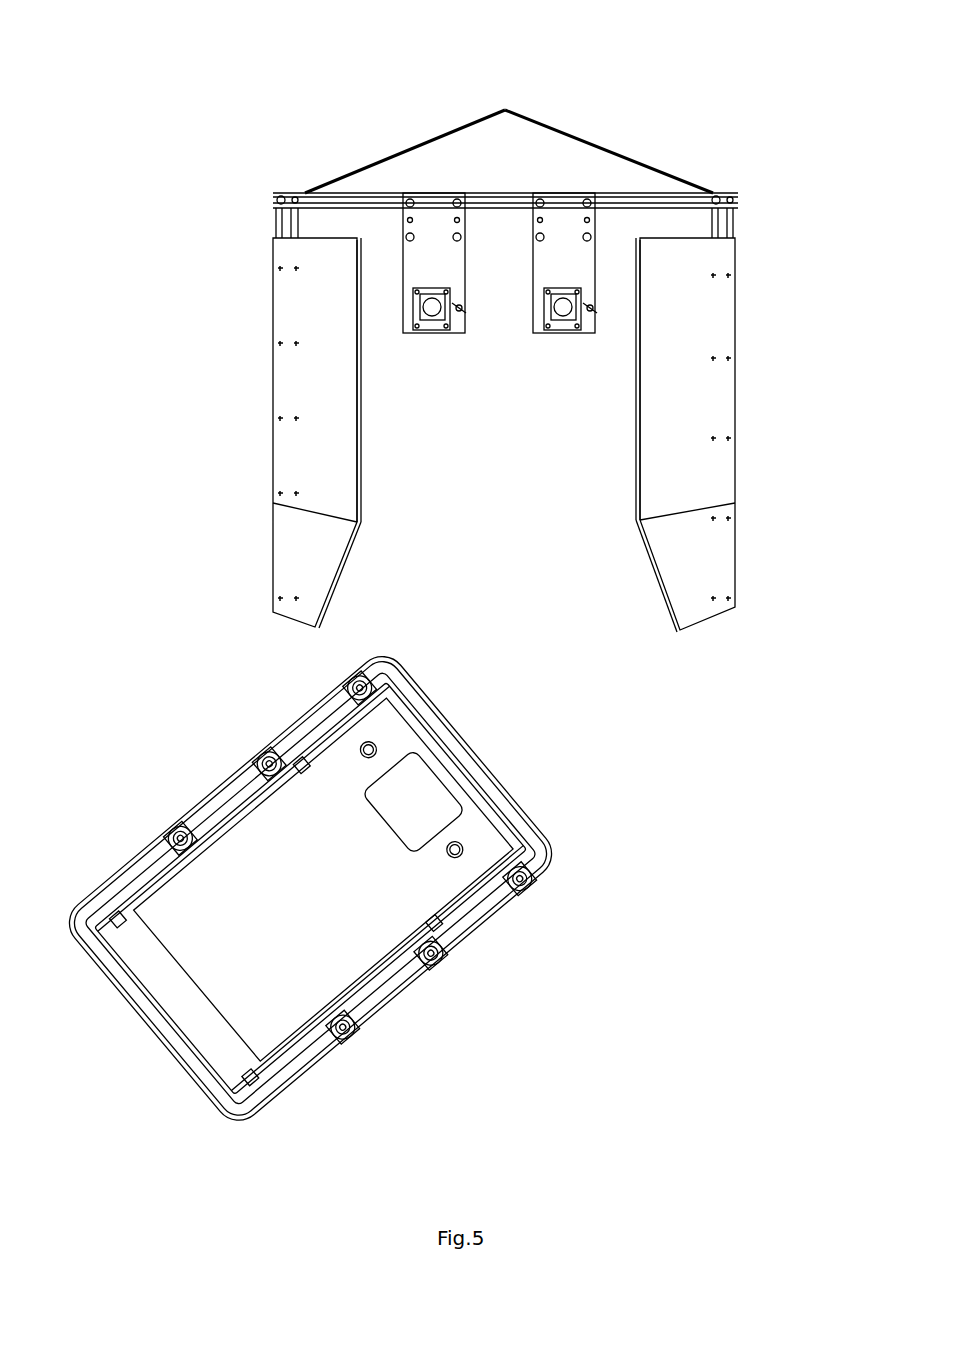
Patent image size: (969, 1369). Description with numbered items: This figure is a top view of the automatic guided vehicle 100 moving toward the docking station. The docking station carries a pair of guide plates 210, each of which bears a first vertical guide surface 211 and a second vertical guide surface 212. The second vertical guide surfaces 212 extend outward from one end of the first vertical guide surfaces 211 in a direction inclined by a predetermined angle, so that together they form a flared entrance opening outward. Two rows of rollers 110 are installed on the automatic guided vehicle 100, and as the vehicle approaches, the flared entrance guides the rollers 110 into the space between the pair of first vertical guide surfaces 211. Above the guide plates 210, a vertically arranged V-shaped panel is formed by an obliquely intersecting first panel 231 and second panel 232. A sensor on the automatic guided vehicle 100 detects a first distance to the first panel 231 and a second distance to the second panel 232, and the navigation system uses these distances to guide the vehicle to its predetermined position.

The automatic guided vehicle 100 is at (148, 1023).
The rollers 110 is at (178, 828).
The guide plates 210 is at (308, 383).
The first vertical guide surfaces 211 is at (362, 397).
The second vertical guide surfaces 212 is at (350, 560).
The first panel 231 is at (400, 145).
The second panel 232 is at (605, 148).